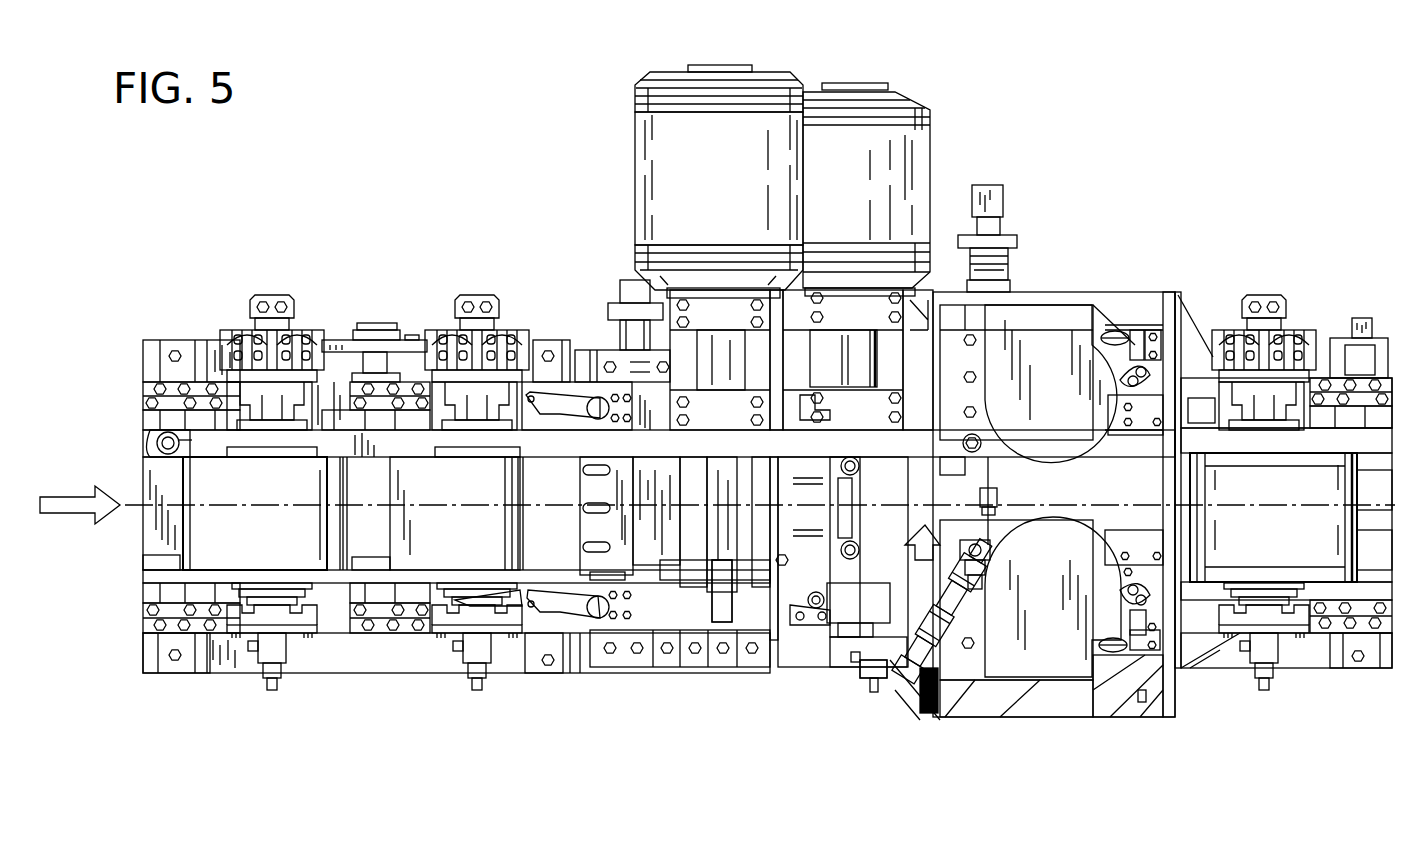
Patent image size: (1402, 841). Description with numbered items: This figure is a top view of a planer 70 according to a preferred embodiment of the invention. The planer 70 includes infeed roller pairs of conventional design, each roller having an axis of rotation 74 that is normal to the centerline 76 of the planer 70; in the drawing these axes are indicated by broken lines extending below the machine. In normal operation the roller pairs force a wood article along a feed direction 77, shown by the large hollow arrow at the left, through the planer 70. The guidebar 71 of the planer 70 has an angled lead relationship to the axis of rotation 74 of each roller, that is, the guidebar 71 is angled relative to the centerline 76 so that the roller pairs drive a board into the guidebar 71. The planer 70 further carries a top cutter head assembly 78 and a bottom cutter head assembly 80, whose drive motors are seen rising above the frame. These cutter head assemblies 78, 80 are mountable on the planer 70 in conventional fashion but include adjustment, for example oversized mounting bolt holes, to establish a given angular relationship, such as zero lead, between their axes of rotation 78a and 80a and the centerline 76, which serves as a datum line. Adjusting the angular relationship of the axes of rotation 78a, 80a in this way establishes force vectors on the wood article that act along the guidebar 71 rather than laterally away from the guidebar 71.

The planer 70 is at (288, 210).
The guidebar 71 is at (168, 443).
The axis of rotation 74 is at (263, 680).
The centerline 76 is at (297, 500).
The feed direction 77 is at (95, 513).
The top cutter head assembly 78 is at (622, 192).
The axis of rotation 78a is at (720, 680).
The bottom cutter head assembly 80 is at (945, 170).
The axis of rotation 80a is at (860, 690).